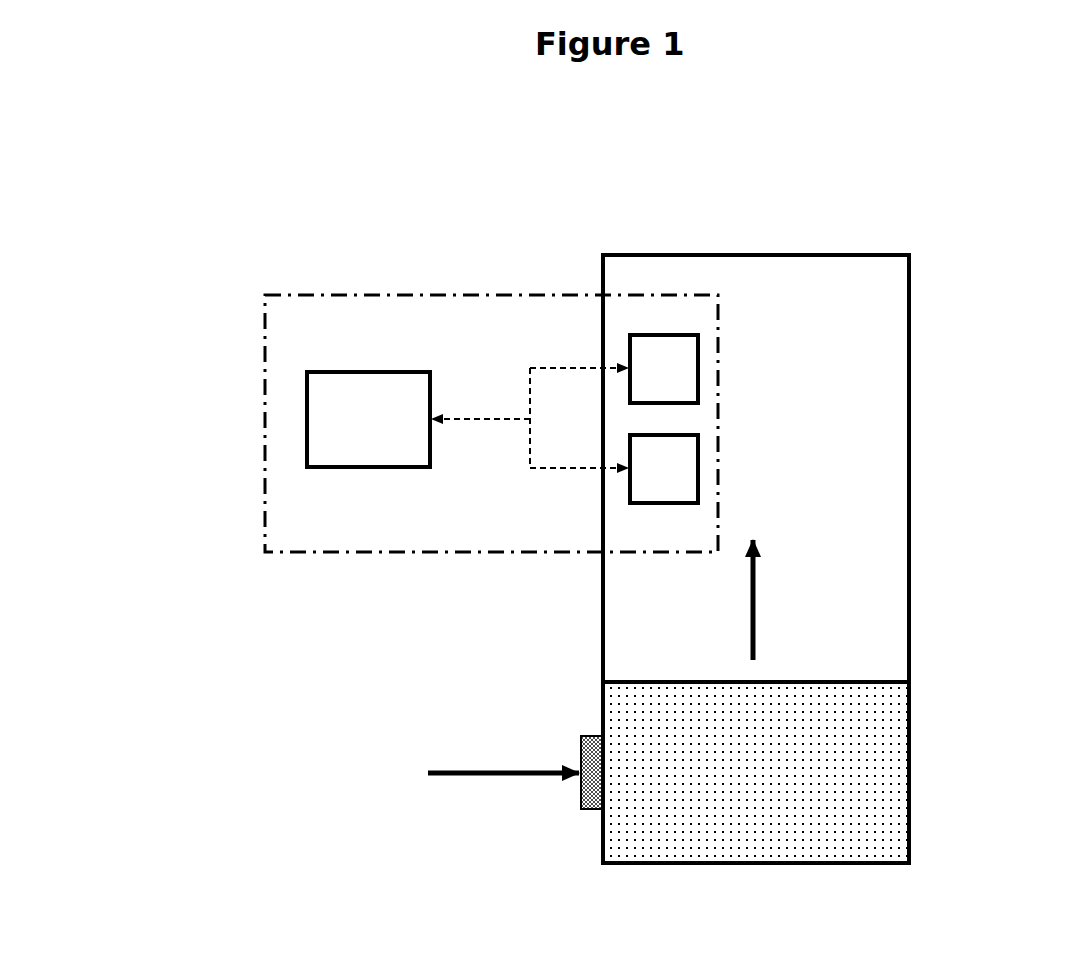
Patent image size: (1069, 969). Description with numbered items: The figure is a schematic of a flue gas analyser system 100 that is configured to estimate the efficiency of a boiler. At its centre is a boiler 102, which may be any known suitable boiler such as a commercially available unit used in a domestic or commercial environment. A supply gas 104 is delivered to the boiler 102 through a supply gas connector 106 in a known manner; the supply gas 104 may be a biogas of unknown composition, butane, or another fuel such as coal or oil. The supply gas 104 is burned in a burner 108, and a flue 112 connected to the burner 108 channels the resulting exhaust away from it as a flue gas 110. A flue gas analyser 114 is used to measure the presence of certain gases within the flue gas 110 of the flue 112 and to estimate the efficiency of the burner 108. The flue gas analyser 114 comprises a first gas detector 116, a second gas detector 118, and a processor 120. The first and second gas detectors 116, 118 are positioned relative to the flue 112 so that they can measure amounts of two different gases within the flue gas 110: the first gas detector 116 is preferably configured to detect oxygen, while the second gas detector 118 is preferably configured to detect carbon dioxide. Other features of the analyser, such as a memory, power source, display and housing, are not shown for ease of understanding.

The flue gas analyser system 100 is at (220, 164).
The boiler 102 is at (580, 611).
The supply gas 104 is at (497, 778).
The supply gas connector 106 is at (592, 814).
The burner 108 is at (912, 830).
The flue gas 110 is at (759, 594).
The flue 112 is at (650, 253).
The flue gas analyser 114 is at (491, 404).
The first gas detector 116 is at (702, 365).
The second gas detector 118 is at (702, 470).
The processor 120 is at (305, 419).